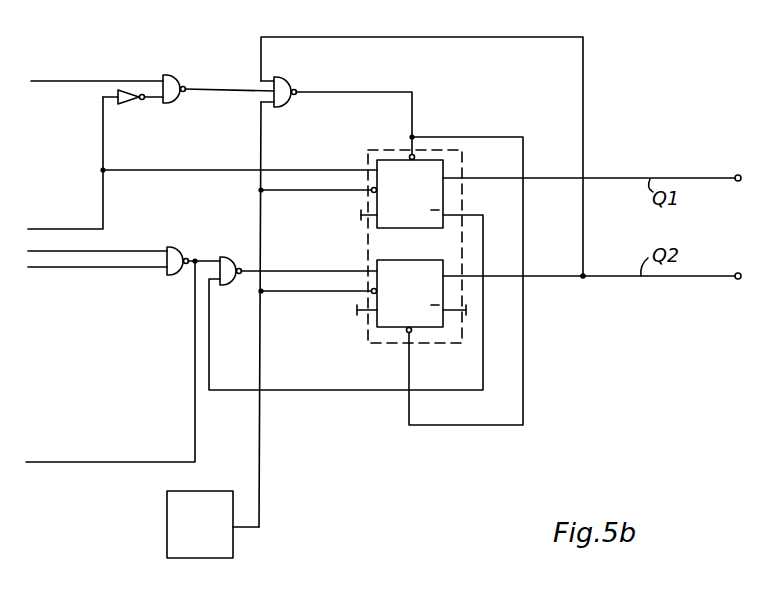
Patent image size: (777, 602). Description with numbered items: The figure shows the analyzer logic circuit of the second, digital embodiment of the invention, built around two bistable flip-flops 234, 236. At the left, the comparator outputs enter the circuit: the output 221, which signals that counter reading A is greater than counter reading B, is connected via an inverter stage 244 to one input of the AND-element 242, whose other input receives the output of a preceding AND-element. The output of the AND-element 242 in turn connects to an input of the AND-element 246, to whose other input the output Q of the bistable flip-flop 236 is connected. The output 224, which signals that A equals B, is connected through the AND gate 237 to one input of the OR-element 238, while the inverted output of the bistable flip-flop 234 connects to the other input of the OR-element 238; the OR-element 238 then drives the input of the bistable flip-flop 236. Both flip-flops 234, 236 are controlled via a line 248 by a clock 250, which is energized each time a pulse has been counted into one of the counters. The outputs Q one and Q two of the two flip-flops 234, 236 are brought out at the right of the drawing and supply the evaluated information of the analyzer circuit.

The output 221 is at (47, 228).
The output 224 is at (43, 272).
The bistable flip-flop 234 is at (444, 195).
The bistable flip-flop 236 is at (405, 331).
The AND gate 237 is at (171, 277).
The OR-element 238 is at (227, 284).
The AND-element 242 is at (176, 75).
The inverter stage 244 is at (138, 104).
The AND-element 246 is at (283, 86).
The line 248 is at (259, 461).
The clock 250 is at (198, 497).